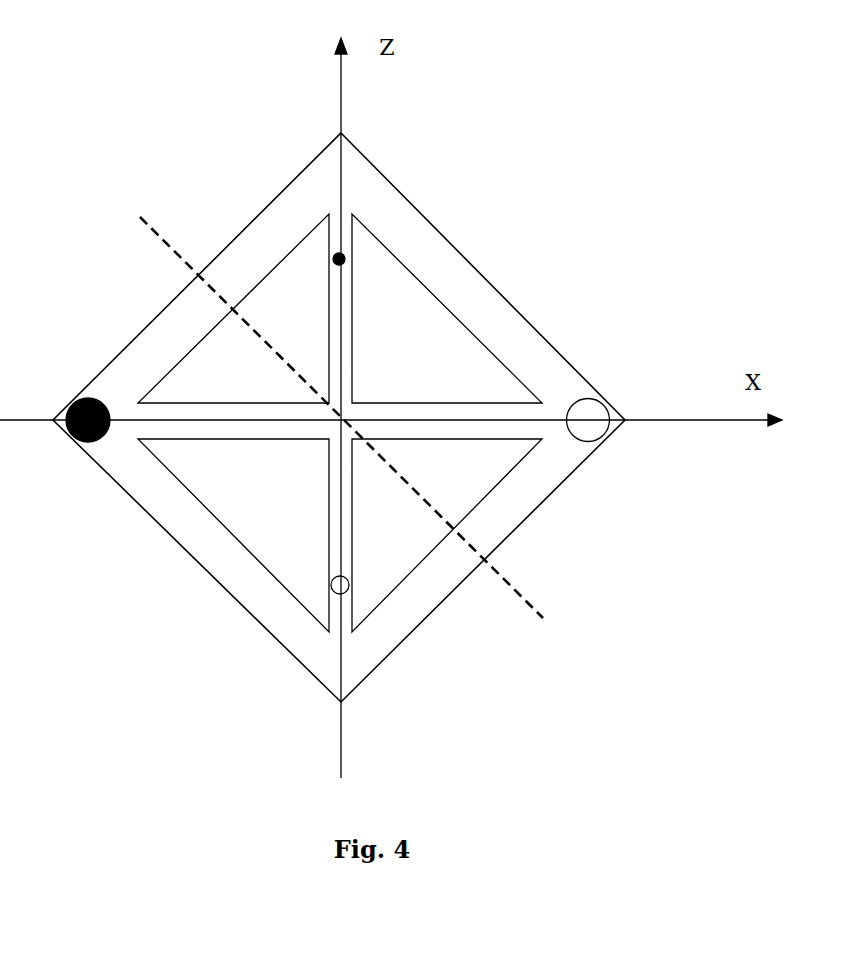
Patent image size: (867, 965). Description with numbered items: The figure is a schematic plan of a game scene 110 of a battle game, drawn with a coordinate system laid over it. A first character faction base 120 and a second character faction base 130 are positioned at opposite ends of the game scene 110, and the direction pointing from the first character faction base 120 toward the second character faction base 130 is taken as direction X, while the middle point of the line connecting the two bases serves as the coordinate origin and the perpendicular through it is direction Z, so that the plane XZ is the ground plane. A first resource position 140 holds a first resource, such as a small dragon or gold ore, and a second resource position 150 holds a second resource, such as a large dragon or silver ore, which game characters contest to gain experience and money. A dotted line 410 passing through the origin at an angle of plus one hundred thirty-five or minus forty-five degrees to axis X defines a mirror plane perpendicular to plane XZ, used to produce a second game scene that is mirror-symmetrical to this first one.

The game scene 110 is at (533, 512).
The first character faction base 120 is at (58, 424).
The second character faction base 130 is at (610, 428).
The first resource position 140 is at (345, 262).
The second resource position 150 is at (335, 594).
The dotted line 410 is at (520, 600).